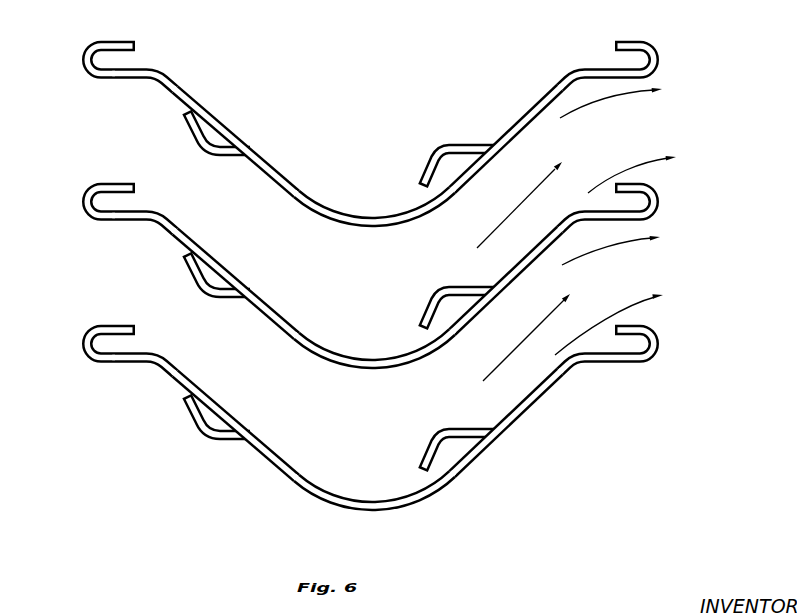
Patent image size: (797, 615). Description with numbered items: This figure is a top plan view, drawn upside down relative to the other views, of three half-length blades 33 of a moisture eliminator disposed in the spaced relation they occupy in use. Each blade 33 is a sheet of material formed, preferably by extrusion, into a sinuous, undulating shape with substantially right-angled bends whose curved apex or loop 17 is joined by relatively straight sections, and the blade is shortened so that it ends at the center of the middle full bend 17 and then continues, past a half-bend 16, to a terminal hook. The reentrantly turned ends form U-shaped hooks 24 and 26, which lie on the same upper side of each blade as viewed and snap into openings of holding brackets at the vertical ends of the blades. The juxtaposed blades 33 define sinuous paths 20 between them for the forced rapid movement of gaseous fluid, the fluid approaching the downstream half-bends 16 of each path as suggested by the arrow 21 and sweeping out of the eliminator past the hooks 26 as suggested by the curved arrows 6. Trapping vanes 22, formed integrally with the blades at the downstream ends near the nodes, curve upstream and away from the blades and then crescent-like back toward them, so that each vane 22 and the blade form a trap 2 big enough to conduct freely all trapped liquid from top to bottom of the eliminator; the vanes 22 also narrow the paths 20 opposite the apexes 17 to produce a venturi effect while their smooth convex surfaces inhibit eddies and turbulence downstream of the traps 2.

The trap 2 is at (215, 136).
The curved arrows 6 is at (597, 106).
The half-bend 16 is at (163, 78).
The curved apex or loop 17 is at (368, 217).
The sinuous path 20 is at (396, 271).
The arrow 21 is at (502, 224).
The trapping vane 22 is at (212, 158).
The hook 24 is at (110, 42).
The hook 26 is at (654, 42).
The half-length blade 33 is at (228, 103).